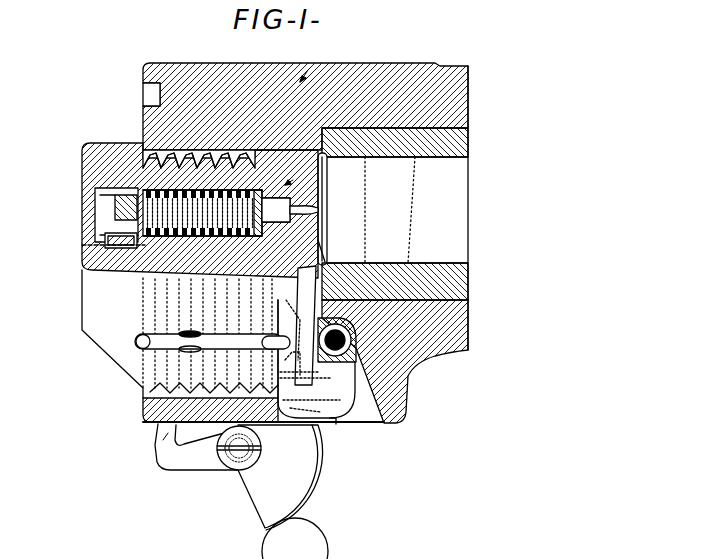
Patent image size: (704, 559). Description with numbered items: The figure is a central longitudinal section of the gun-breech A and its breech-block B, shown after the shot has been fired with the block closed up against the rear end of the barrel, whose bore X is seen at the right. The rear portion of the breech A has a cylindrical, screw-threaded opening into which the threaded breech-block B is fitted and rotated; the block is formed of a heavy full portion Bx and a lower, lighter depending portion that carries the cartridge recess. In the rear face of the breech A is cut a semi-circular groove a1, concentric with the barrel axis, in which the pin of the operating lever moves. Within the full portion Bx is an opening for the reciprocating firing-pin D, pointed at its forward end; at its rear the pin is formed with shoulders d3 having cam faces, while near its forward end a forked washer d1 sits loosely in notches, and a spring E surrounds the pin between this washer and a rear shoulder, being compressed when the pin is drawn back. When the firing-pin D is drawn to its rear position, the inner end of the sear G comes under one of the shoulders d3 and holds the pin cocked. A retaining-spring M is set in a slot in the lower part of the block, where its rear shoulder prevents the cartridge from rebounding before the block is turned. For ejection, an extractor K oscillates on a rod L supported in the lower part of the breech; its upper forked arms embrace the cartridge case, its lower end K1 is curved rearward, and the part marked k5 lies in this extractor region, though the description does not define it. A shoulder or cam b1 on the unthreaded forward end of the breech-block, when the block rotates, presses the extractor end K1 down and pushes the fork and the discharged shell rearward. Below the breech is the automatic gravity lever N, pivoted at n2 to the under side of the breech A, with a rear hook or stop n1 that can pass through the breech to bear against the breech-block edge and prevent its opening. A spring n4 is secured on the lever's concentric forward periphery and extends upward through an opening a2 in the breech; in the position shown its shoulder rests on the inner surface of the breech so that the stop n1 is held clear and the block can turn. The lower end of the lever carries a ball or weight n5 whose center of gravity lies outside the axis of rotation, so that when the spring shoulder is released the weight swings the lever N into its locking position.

The gun-breech A is at (295, 70).
The semi-circular groove a1 is at (143, 95).
The bore of the gun X is at (397, 208).
The shoulder or cam b1 is at (327, 180).
The breech-block B is at (60, 202).
The firing-pin D is at (290, 210).
The shoulders of the firing-pin d3 is at (95, 245).
The extractor K is at (333, 257).
The sear G is at (97, 272).
The full portion of the breech-block Bx is at (152, 288).
The spring E is at (213, 333).
The retaining-spring M is at (208, 343).
The forked washer d1 is at (298, 325).
The rod L is at (317, 359).
The spring tooth k5 is at (296, 357).
The end of the extractor K1 is at (338, 360).
The opening in the breech a2 is at (334, 426).
The automatic gravity lever N is at (239, 477).
The pivot n2 is at (232, 472).
The hook or stop n1 is at (160, 442).
The spring n4 is at (320, 480).
The ball or weight n5 is at (295, 538).